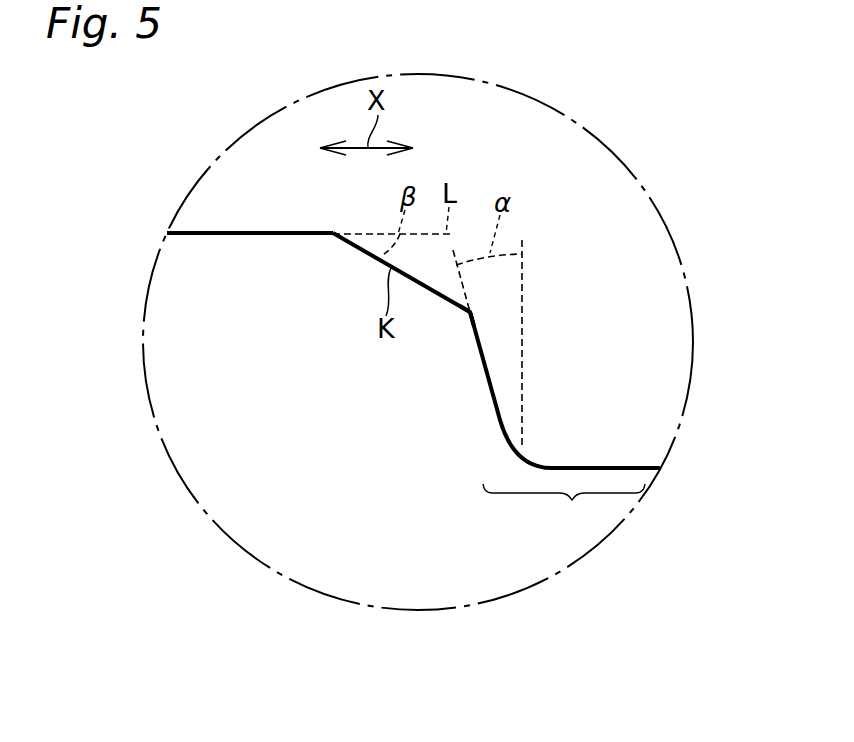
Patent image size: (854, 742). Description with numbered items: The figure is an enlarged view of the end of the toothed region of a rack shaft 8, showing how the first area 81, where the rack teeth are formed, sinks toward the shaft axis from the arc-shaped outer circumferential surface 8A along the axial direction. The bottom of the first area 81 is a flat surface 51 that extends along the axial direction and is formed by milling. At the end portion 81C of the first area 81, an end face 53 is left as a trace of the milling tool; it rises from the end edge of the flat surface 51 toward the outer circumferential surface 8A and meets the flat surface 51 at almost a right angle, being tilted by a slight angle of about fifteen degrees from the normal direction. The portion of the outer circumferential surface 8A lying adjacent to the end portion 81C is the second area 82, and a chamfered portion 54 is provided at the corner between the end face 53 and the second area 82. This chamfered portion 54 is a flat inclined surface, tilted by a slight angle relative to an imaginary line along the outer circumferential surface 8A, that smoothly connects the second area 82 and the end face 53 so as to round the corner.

The rack shaft 8 is at (327, 563).
The outer circumferential surface 8A is at (243, 233).
The second area 82 is at (305, 233).
The chamfered portion 54 is at (430, 289).
The end portion 81C is at (482, 352).
The end face 53 is at (488, 372).
The flat surface 51 is at (608, 468).
The first area 81 is at (564, 511).